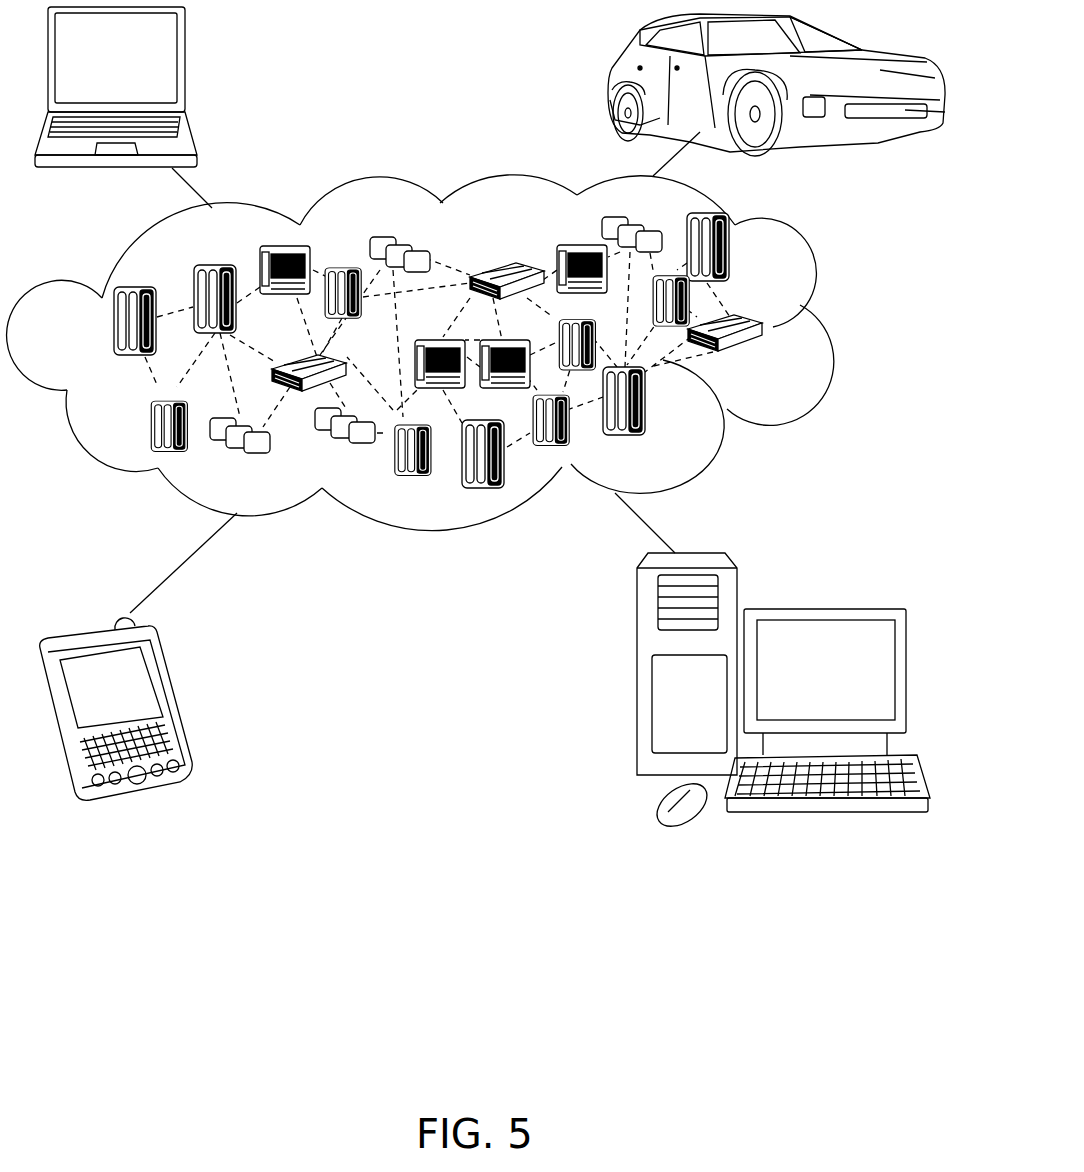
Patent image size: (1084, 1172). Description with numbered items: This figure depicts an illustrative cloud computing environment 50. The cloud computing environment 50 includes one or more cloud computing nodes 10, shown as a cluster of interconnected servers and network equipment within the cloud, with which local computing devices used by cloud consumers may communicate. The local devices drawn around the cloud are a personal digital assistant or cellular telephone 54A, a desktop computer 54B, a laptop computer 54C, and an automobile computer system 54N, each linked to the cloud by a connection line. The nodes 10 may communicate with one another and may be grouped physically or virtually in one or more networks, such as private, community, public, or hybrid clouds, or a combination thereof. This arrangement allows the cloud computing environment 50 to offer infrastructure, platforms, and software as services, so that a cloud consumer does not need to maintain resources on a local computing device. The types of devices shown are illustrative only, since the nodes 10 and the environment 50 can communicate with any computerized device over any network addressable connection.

The cloud computing node 10 is at (772, 360).
The cloud computing environment 50 is at (826, 331).
The personal digital assistant or cellular telephone 54A is at (172, 700).
The desktop computer 54B is at (820, 608).
The laptop computer 54C is at (187, 65).
The automobile computer system 54N is at (608, 82).